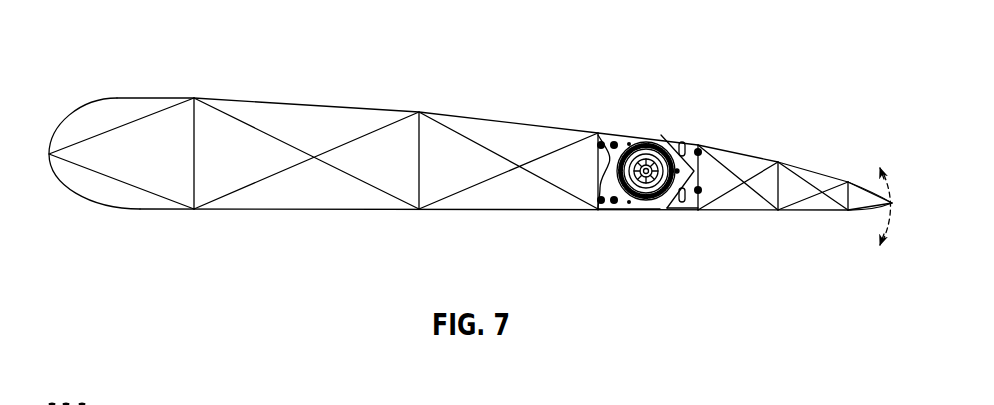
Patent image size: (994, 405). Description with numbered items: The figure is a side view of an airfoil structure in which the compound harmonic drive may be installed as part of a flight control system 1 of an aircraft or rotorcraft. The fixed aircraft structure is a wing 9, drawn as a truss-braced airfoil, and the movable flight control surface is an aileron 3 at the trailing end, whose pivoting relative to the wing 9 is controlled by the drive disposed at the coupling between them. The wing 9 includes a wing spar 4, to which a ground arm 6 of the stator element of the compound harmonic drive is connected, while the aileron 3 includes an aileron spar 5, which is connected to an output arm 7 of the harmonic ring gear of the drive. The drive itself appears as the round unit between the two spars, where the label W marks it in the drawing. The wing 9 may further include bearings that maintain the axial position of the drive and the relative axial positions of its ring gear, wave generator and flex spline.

The flight control system 1 is at (572, 94).
The aileron 3 is at (810, 228).
The wing spar 4 is at (596, 163).
The aileron spar 5 is at (702, 168).
The ground arm 6 is at (594, 204).
The output arm 7 is at (690, 198).
The wing 9 is at (140, 97).
The wheel W is at (658, 147).